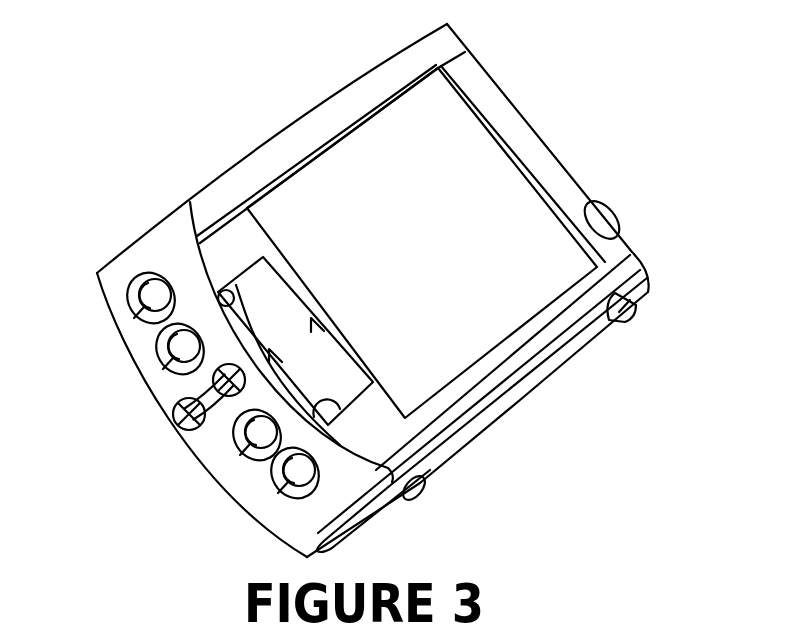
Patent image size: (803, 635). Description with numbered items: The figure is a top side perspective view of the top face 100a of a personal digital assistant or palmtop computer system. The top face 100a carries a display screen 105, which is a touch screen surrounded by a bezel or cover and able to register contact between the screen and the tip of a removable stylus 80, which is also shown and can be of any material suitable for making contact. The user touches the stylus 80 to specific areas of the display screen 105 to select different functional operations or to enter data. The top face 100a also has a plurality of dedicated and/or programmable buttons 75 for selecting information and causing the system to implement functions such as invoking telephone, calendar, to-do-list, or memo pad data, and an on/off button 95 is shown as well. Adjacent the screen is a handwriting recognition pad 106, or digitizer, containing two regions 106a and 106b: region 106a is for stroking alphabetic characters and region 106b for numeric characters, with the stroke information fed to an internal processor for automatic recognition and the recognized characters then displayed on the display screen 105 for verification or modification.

The top face 100a is at (346, 290).
The display screen 105 is at (422, 243).
The handwriting recognition pad 106 is at (236, 285).
The region 106a is at (271, 311).
The region 106b is at (312, 383).
The buttons 75 is at (157, 296).
The on/off button 95 is at (621, 218).
The stylus 80 is at (547, 365).